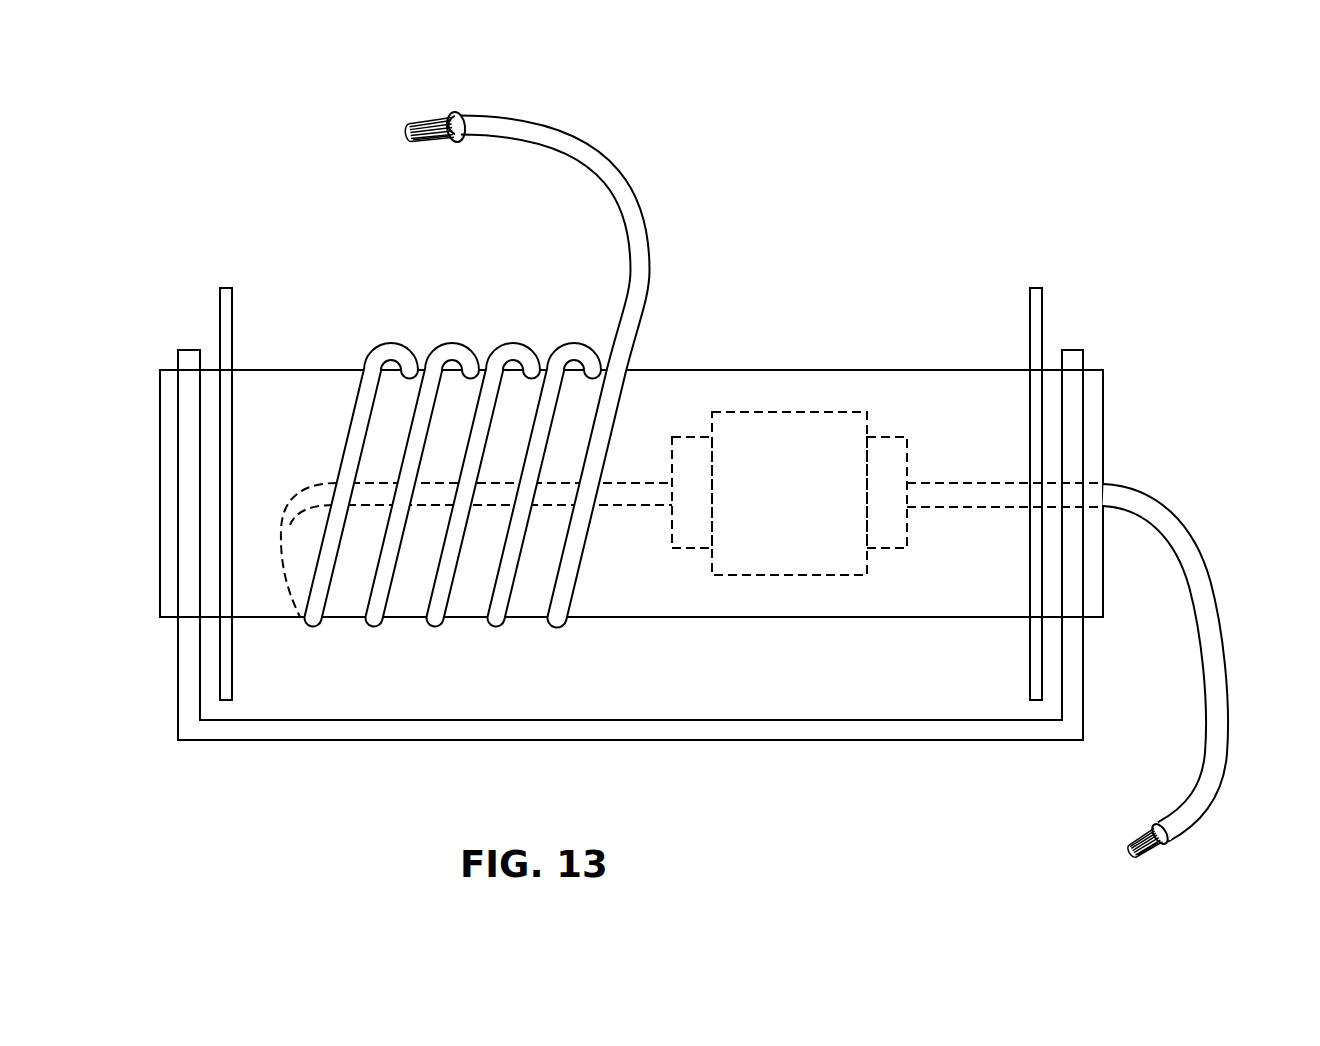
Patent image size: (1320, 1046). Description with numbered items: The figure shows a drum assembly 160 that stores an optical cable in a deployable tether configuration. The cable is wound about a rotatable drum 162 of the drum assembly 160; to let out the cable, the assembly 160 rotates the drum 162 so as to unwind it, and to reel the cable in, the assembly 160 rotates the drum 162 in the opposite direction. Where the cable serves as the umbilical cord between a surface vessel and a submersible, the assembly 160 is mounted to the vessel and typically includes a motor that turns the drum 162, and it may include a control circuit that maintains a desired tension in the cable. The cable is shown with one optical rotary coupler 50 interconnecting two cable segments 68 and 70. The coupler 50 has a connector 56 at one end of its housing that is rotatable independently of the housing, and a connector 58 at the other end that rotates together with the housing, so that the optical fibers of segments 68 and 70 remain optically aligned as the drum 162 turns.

The drum assembly 160 is at (890, 190).
The rotatable drum 162 is at (692, 620).
The cable segment 68 is at (640, 165).
The cable segment 70 is at (1243, 633).
The optical rotary coupler 50 is at (786, 400).
The connector 56 is at (695, 430).
The connector 58 is at (881, 430).